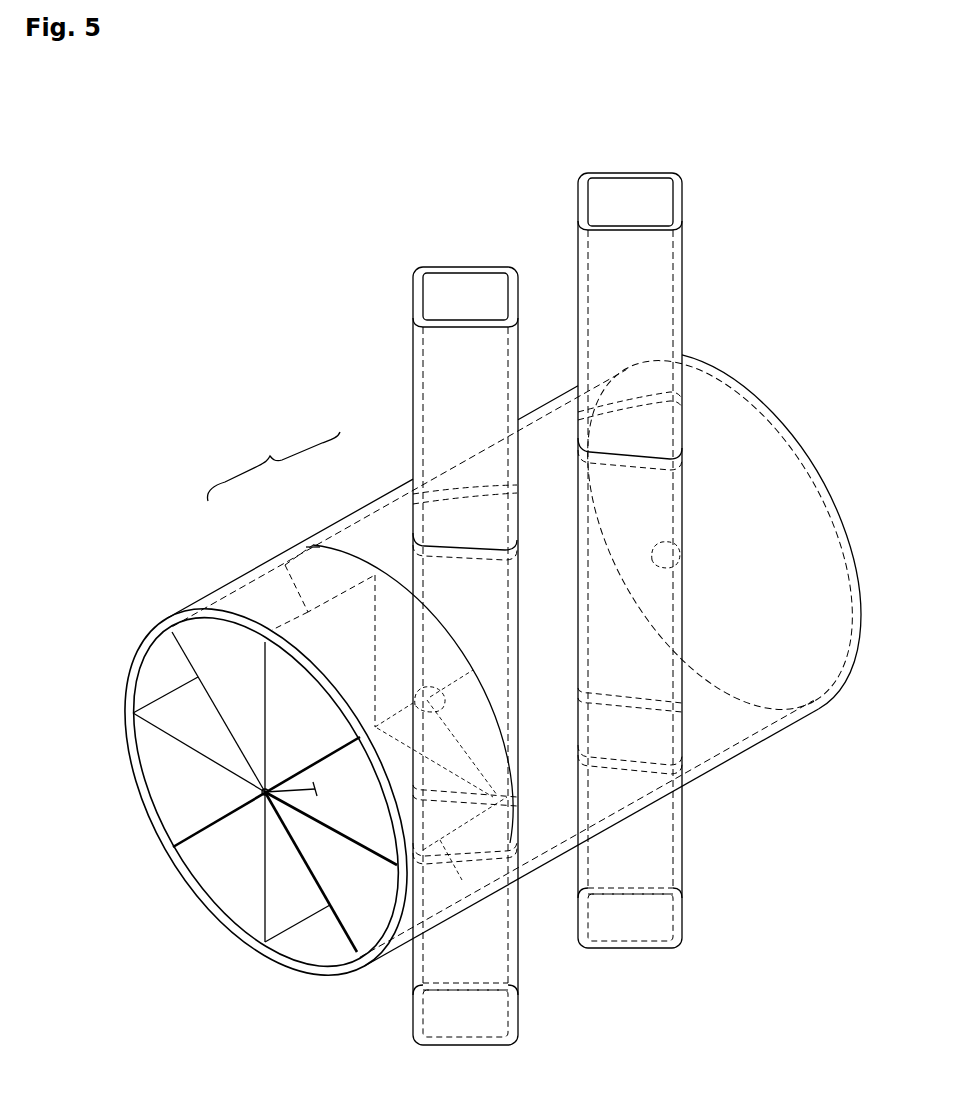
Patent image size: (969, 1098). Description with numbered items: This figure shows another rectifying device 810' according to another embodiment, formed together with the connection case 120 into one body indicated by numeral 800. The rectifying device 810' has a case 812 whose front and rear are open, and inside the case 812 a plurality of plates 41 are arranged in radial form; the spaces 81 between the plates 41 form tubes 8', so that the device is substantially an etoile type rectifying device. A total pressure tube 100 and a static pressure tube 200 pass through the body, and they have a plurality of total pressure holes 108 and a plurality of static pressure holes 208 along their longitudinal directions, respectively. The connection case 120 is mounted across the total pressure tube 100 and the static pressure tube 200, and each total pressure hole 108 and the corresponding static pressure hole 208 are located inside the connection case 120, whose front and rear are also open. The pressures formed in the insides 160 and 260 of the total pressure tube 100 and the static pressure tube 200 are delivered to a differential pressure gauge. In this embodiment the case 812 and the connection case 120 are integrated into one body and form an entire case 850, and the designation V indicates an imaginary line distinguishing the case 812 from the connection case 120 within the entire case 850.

The rectifying device and connection case body 800 is at (487, 669).
The case 812 is at (232, 592).
The connection case 120 is at (356, 526).
The entire case 850 is at (273, 462).
The imaginary line V is at (313, 545).
The tubes 8' is at (222, 828).
The plates 41 is at (313, 785).
The spaces 81 is at (337, 815).
The rectifying device 810' is at (311, 908).
The total pressure tube 100 is at (399, 622).
The inside of the total pressure tube 160 is at (471, 297).
The total pressure hole 108 is at (415, 701).
The static pressure tube 200 is at (675, 528).
The inside of the static pressure tube 260 is at (621, 205).
The static pressure hole 208 is at (683, 553).